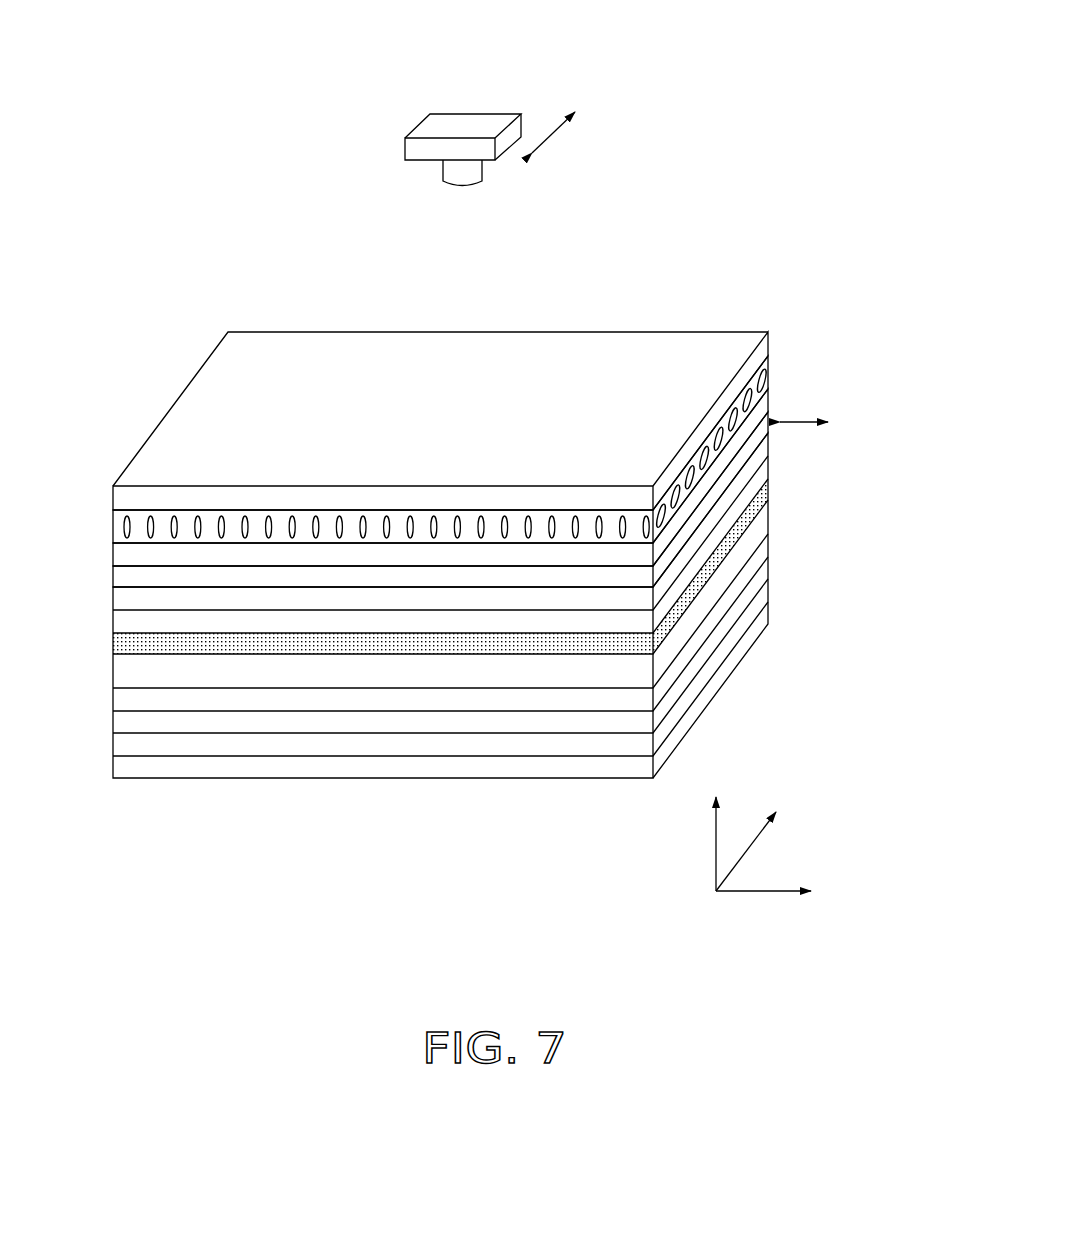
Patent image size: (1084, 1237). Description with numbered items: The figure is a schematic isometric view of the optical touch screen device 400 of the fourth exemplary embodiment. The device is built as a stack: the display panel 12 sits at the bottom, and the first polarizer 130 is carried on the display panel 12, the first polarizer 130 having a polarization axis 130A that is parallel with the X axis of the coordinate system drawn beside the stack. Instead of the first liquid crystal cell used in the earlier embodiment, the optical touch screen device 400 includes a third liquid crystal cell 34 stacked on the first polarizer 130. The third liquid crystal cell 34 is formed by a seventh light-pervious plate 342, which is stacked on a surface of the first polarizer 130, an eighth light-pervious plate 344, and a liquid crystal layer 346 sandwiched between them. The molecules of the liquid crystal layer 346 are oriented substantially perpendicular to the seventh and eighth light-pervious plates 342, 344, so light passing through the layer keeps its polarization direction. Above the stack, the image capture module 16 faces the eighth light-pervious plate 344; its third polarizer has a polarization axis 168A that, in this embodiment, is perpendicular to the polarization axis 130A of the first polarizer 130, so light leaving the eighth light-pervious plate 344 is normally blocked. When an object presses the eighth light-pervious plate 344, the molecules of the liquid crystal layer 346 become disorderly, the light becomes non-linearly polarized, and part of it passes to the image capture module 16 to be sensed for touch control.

The optical touch screen device 400 is at (487, 42).
The image capture module 16 is at (434, 128).
The polarization axis 168A is at (553, 131).
The eighth light-pervious plate 344 is at (771, 332).
The liquid crystal layer 346 is at (758, 352).
The seventh light-pervious plate 342 is at (758, 407).
The third liquid crystal cell 34 is at (518, 429).
The first polarizer 130 is at (745, 450).
The polarization axis 130A is at (806, 422).
The display panel 12 is at (110, 576).